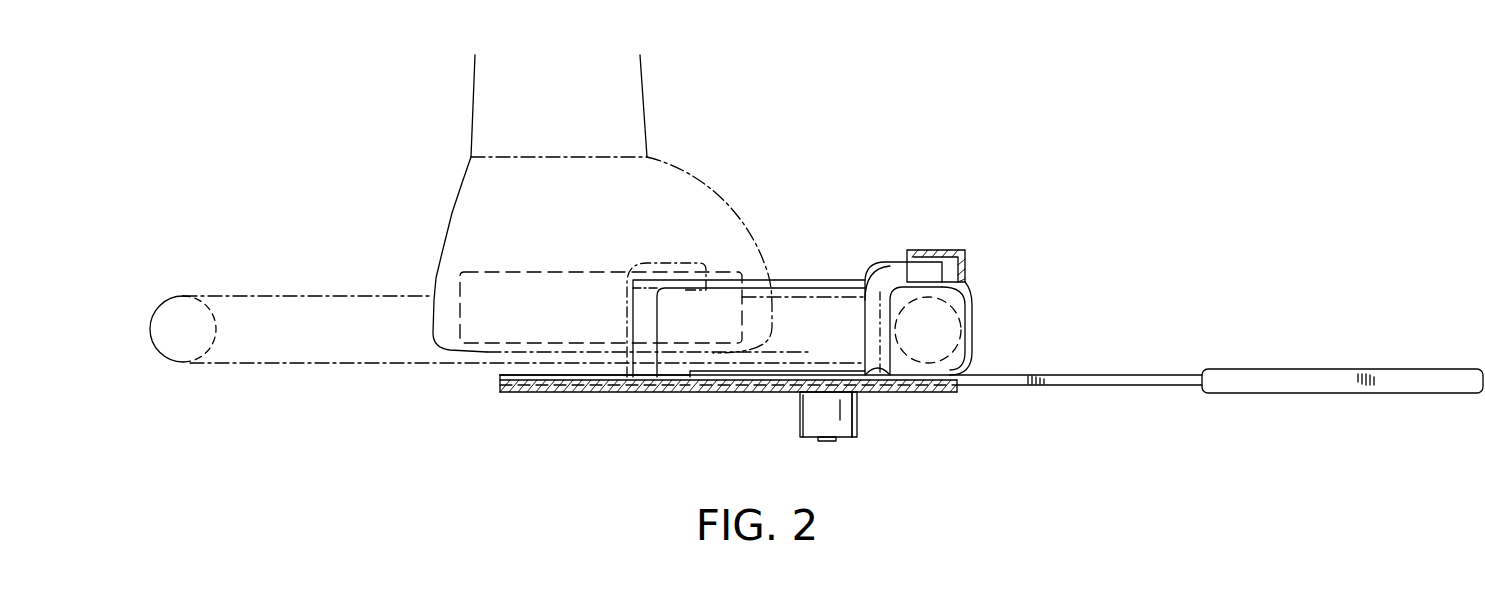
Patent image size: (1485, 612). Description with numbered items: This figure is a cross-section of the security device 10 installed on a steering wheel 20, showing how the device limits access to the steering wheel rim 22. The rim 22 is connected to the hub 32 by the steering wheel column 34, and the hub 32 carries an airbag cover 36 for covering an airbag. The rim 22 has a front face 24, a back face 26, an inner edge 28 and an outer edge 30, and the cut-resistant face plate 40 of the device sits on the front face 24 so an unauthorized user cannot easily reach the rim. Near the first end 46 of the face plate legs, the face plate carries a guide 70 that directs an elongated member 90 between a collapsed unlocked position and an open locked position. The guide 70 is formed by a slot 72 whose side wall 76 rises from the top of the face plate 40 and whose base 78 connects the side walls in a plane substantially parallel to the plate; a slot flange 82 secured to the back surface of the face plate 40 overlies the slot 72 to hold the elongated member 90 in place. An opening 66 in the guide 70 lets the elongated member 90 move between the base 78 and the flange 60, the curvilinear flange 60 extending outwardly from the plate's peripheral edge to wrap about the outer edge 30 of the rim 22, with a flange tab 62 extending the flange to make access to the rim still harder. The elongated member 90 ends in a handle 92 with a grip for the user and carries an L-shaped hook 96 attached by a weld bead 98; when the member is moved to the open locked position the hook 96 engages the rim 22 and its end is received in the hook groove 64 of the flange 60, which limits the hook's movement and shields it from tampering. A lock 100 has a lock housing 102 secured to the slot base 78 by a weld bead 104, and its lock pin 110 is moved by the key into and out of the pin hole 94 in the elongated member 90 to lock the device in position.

The security device 10 is at (972, 482).
The steering wheel 20 is at (270, 390).
The steering wheel rim 22 is at (200, 353).
The front face 24 is at (182, 365).
The back face 26 is at (183, 297).
The inner edge 28 is at (217, 327).
The outer edge 30 is at (150, 328).
The hub 32 is at (460, 215).
The steering wheel column 34 is at (481, 82).
The airbag cover 36 is at (488, 353).
The face plate 40 is at (670, 385).
The first end 46 is at (528, 373).
The flange 60 is at (970, 308).
The flange tab 62 is at (667, 282).
The hook groove 64 is at (948, 262).
The opening 66 is at (962, 378).
The guide 70 is at (627, 397).
The slot 72 is at (572, 373).
The side wall 76 is at (538, 385).
The base 78 is at (588, 393).
The slot flange 82 is at (717, 372).
The elongated member 90 is at (1108, 387).
The handle 92 is at (1335, 385).
The pin hole 94 is at (818, 388).
The hook 96 is at (697, 262).
The weld bead 98 is at (880, 372).
The lock 100 is at (858, 439).
The lock housing 102 is at (800, 422).
The weld bead 104 is at (858, 396).
The lock pin 110 is at (833, 387).